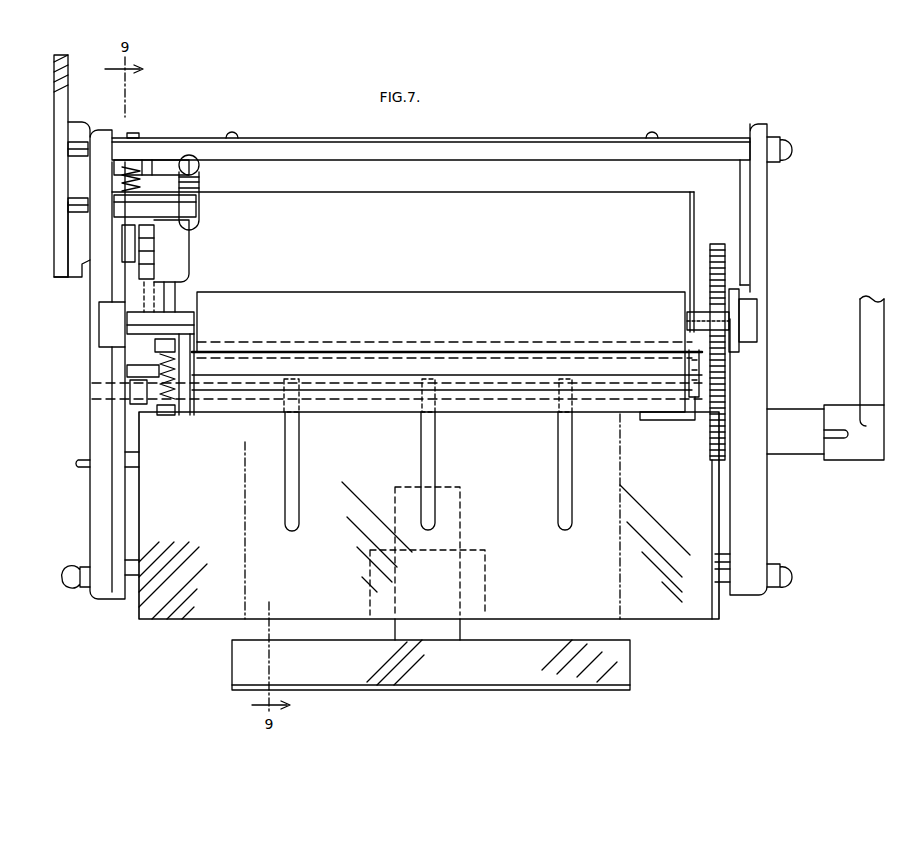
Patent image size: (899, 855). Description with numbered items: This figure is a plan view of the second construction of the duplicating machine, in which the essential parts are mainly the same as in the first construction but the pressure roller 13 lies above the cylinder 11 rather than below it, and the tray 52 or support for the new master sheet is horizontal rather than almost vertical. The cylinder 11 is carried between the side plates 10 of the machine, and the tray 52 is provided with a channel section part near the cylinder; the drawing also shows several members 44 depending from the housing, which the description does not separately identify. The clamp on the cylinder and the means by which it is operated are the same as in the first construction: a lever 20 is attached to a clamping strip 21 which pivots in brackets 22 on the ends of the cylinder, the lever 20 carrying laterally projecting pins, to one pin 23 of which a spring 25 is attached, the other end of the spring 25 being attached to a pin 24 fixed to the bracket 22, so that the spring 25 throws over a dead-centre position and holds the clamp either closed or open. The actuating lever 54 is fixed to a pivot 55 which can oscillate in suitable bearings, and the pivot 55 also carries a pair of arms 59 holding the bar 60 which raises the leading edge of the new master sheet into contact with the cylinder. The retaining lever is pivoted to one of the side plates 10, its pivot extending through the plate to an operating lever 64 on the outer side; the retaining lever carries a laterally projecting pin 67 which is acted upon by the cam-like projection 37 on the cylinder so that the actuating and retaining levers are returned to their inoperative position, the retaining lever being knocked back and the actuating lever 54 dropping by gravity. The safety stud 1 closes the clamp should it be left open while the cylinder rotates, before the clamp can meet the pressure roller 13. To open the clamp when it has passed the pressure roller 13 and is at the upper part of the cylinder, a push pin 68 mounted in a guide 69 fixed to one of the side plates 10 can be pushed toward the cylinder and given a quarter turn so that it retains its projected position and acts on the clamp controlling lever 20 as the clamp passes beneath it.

The safety stud 1 is at (125, 368).
The side plates 10 is at (98, 438).
The cylinder 11 is at (392, 190).
The pressure roller 13 is at (368, 298).
The lever 20 is at (188, 410).
The clamping strip 21 is at (373, 378).
The brackets 22 is at (183, 358).
The pin 23 is at (177, 413).
The pin 24 is at (185, 330).
The spring 25 is at (162, 390).
The cam-like projection 37 is at (127, 278).
The pins 44 is at (288, 497).
The tray 52 is at (195, 577).
The actuating lever 54 is at (143, 263).
The pivot 55 is at (123, 392).
The arms 59 is at (205, 368).
The bar 60 is at (375, 340).
The operating lever 64 is at (58, 102).
The pin 67 is at (157, 167).
The push pin 68 is at (190, 165).
The guide 69 is at (197, 201).